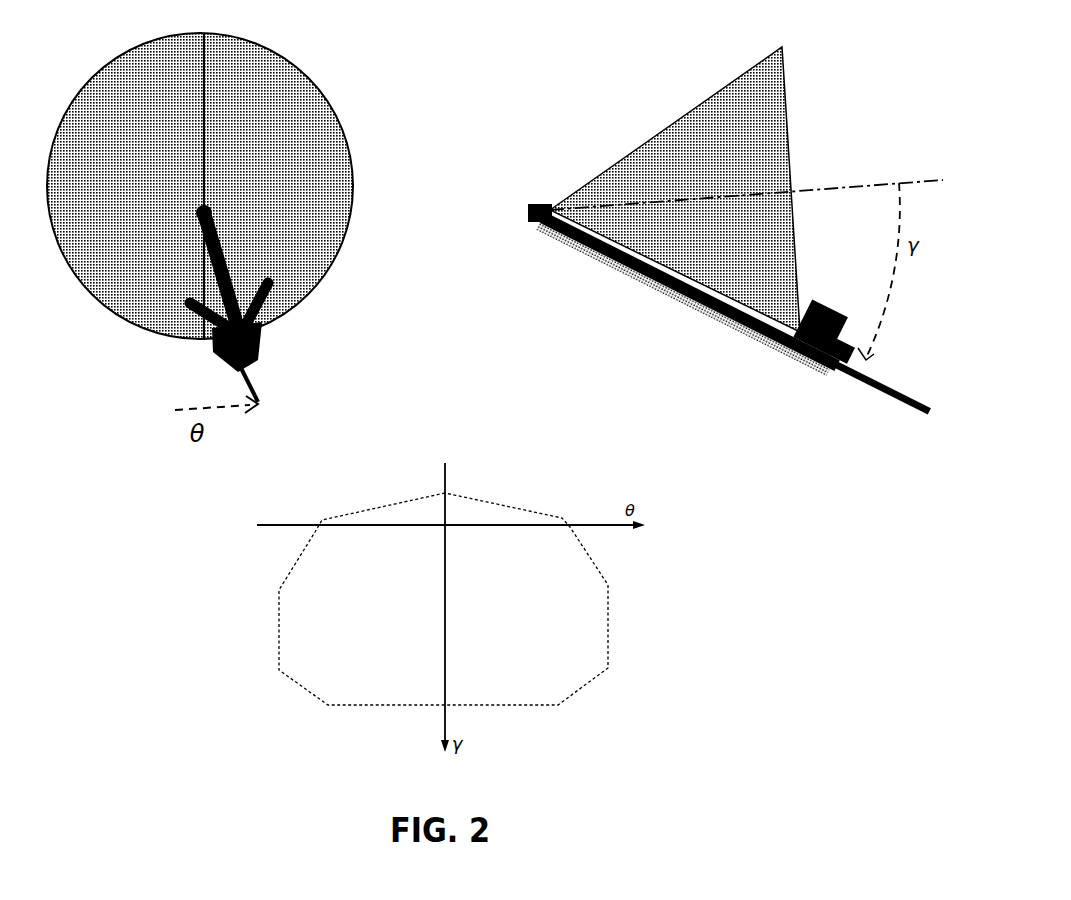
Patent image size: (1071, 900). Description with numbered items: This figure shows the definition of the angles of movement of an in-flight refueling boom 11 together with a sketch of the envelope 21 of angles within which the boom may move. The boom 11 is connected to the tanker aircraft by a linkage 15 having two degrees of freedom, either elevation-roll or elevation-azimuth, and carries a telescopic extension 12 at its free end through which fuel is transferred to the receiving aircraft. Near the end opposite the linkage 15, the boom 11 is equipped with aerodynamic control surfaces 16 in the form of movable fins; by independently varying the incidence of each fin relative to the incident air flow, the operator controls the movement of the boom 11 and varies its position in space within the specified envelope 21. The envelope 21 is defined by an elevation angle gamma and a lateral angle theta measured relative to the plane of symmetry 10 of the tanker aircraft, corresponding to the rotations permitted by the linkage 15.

The plane of symmetry 10 is at (191, 297).
The boom 11 is at (224, 268).
The telescopic extension 12 is at (886, 388).
The linkage 15 is at (212, 210).
The aerodynamic control surfaces 16 is at (266, 330).
The envelope 21 is at (613, 609).